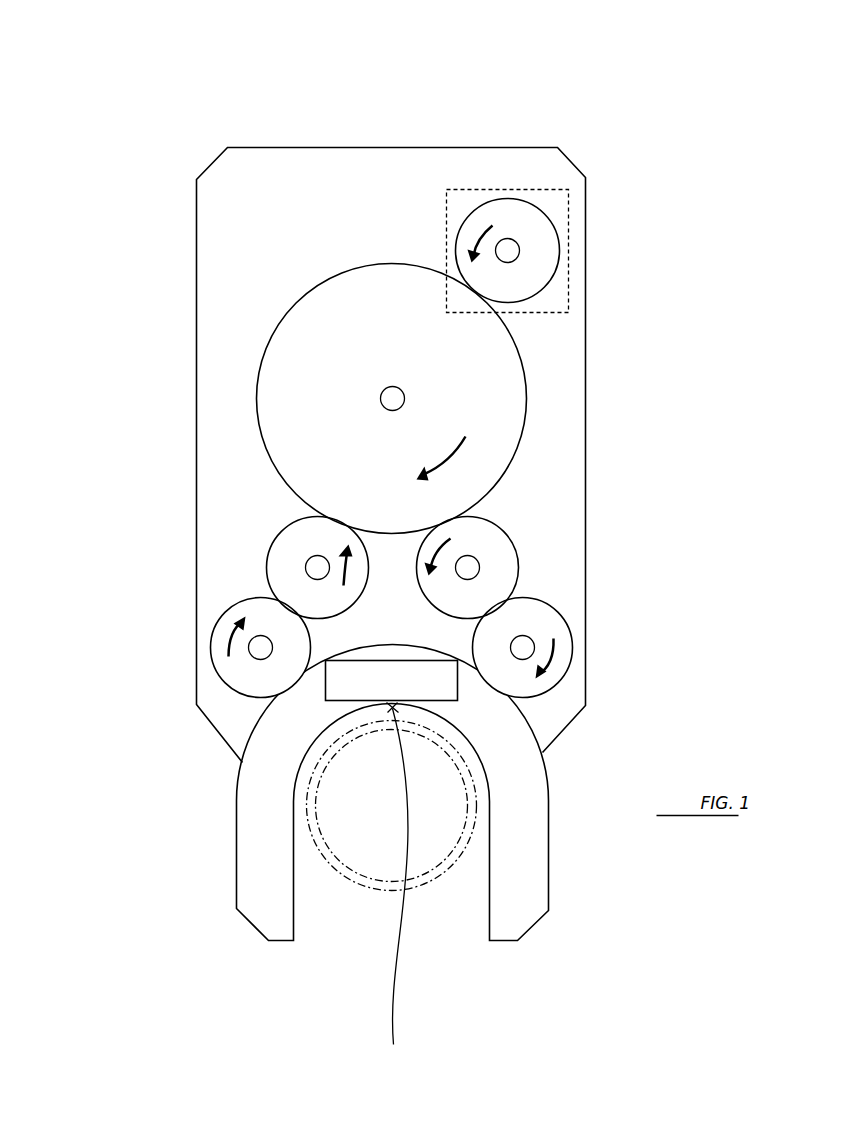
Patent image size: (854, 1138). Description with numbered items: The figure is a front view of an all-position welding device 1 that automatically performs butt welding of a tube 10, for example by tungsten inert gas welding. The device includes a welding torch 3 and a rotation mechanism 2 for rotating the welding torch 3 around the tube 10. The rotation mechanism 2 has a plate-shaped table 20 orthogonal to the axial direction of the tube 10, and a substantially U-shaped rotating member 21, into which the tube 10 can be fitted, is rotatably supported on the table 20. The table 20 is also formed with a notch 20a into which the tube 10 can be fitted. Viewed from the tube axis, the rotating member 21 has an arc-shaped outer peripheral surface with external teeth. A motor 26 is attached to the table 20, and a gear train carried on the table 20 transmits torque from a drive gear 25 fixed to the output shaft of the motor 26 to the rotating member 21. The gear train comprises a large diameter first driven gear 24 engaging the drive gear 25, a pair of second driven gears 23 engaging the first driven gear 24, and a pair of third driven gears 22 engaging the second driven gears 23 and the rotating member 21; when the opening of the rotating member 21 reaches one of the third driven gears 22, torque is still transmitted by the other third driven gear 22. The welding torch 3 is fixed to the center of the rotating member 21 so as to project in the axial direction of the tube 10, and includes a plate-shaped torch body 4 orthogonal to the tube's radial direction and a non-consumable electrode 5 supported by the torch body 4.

The all-position welding device 1 is at (120, 70).
The rotation mechanism 2 is at (196, 342).
The welding torch 3 is at (352, 686).
The torch body 4 is at (345, 702).
The non-consumable electrode 5 is at (397, 888).
The tube 10 is at (420, 884).
The table 20 is at (227, 240).
The notch 20a is at (463, 927).
The rotating member 21 is at (522, 815).
The third driven gear 22 is at (220, 626).
The second driven gear 23 is at (280, 548).
The first driven gear 24 is at (298, 450).
The drive gear 25 is at (523, 212).
The motor 26 is at (480, 187).